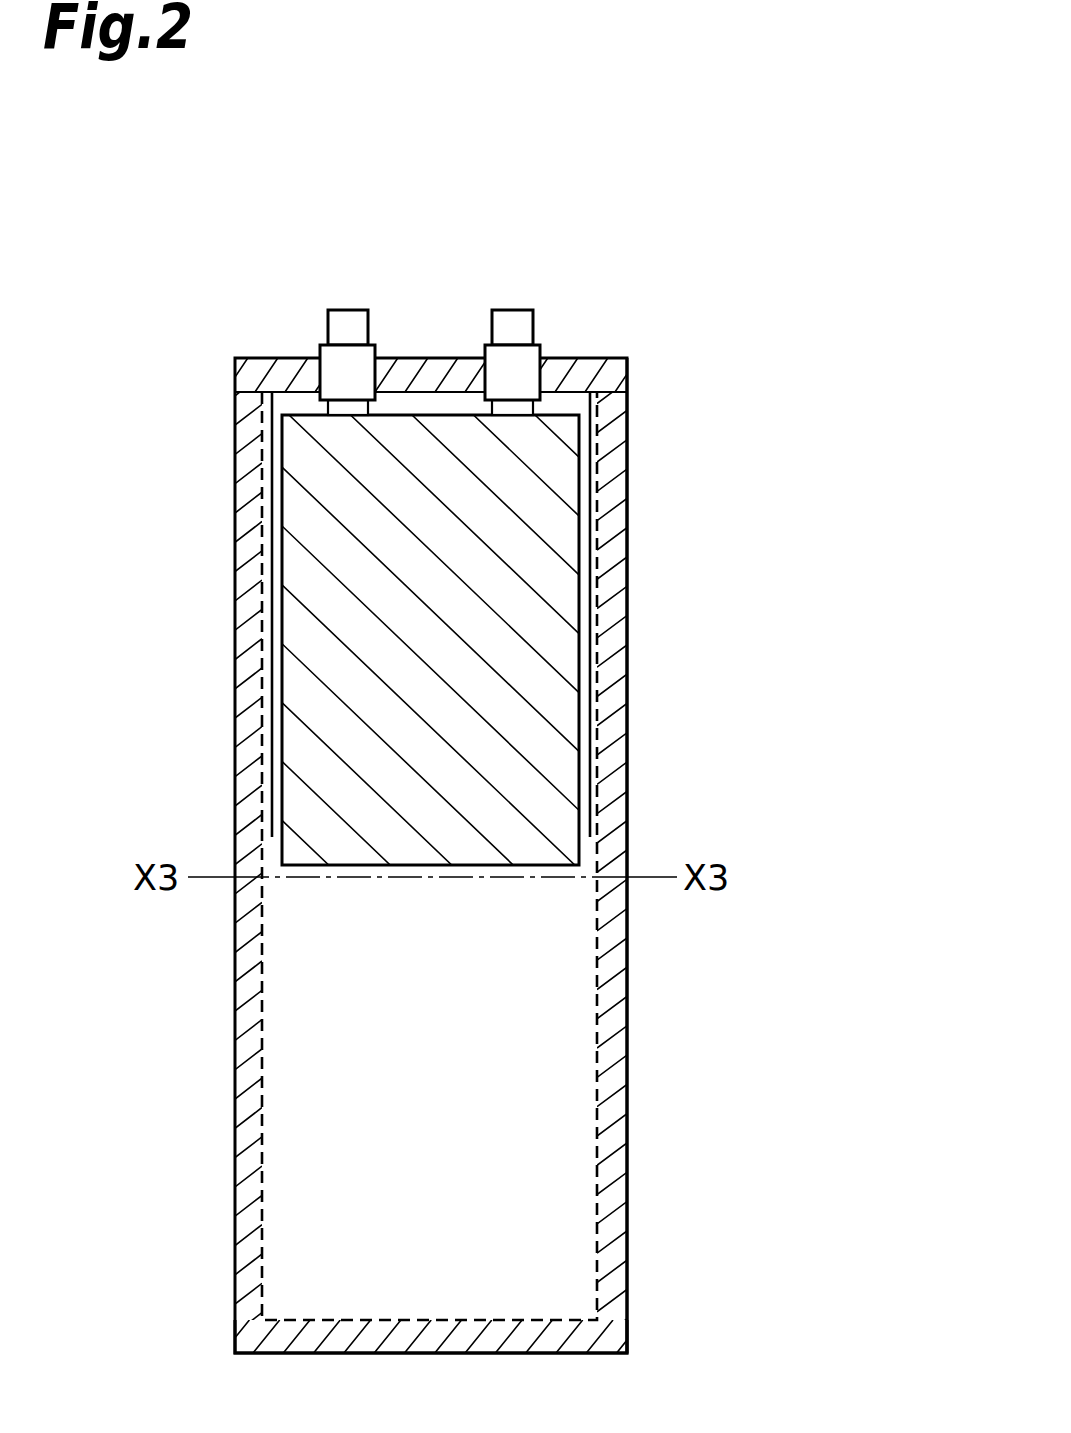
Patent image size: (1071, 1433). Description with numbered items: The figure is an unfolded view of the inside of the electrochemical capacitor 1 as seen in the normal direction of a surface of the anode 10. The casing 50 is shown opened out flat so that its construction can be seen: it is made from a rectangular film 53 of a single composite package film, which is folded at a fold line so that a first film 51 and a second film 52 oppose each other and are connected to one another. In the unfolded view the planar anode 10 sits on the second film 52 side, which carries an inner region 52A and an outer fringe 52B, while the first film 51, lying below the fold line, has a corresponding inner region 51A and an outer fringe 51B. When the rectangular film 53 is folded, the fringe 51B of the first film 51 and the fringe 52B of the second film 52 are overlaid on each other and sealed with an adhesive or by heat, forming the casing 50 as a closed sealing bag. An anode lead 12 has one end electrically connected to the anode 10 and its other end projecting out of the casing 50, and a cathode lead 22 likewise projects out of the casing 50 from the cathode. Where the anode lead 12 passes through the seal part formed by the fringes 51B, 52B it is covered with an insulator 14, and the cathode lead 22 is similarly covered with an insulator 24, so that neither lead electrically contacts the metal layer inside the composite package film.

The electrochemical capacitor 1 is at (622, 212).
The anode 10 is at (320, 750).
The anode lead 12 is at (348, 310).
The insulator 14 is at (320, 355).
The cathode lead 22 is at (512, 310).
The insulator 24 is at (483, 353).
The casing 50 is at (836, 395).
The first film 51 is at (533, 872).
The inner layer of lower case 51A is at (550, 1263).
The fringe of the first film 51B is at (608, 1337).
The second film 52 is at (535, 596).
The inner layer of upper case 52A is at (568, 400).
The fringe of the second film 52B is at (610, 372).
The rectangular film 53 is at (627, 953).